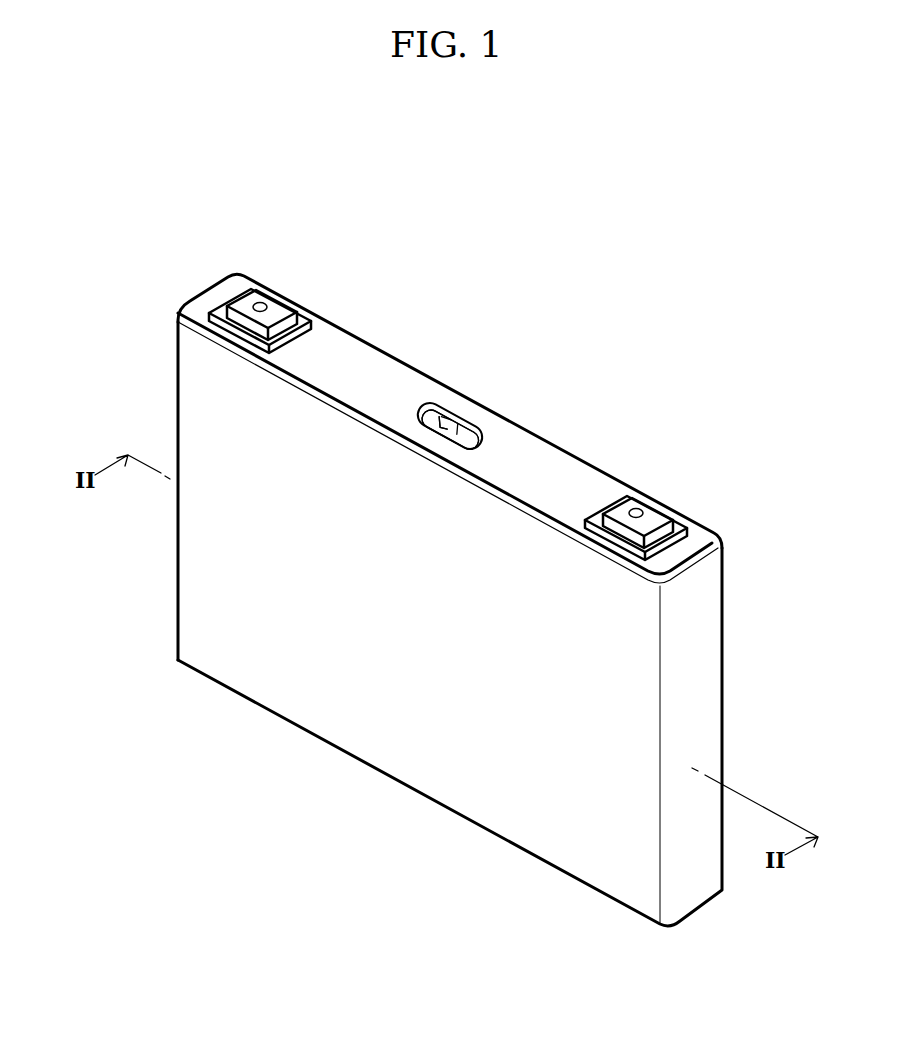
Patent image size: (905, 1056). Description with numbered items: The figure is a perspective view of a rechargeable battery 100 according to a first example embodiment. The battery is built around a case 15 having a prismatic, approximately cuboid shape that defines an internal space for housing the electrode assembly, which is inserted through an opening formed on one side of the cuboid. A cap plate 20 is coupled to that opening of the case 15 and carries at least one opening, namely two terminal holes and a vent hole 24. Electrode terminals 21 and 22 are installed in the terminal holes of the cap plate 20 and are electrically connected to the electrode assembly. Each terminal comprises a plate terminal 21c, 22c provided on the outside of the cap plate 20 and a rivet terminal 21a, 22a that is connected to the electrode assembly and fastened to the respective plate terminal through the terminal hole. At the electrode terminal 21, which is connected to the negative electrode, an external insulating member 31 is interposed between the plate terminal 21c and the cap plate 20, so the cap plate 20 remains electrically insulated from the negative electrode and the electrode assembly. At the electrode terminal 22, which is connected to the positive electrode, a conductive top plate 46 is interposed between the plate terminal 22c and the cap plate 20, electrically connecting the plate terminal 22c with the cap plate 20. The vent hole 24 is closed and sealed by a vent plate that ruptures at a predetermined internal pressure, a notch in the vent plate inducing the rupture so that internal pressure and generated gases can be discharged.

The rechargeable battery 100 is at (479, 200).
The case 15 is at (390, 743).
The cap plate 20 is at (358, 362).
The electrode terminal 21 is at (240, 290).
The rivet terminal 21a is at (262, 303).
The plate terminal 21c is at (290, 314).
The external insulating member 31 is at (212, 314).
The electrode terminal 22 is at (630, 486).
The rivet terminal 22a is at (637, 512).
The plate terminal 22c is at (656, 517).
The top plate 46 is at (678, 528).
The vent hole 24 is at (432, 412).